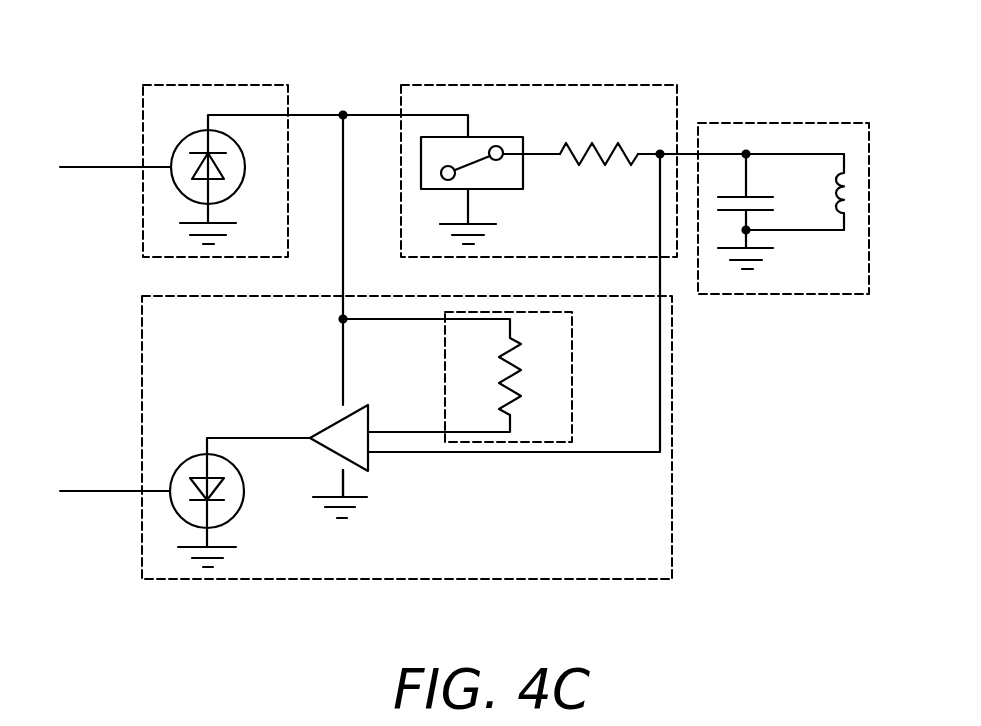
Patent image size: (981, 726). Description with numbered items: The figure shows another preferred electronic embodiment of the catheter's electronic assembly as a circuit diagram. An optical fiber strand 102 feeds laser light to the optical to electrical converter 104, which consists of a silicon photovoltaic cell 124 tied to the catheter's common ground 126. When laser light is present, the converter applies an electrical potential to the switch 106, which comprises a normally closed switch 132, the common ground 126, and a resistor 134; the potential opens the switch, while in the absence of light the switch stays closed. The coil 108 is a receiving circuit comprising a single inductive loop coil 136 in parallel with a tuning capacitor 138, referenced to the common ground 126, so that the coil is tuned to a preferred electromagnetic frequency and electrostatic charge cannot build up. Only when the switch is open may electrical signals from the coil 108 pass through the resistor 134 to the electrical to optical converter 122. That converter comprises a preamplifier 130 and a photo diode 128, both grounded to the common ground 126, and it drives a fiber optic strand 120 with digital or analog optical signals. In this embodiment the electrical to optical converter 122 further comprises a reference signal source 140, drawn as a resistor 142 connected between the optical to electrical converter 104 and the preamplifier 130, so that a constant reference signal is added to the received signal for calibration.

The optical fiber strand 102 is at (73, 167).
The optical to electrical converter 104 is at (215, 83).
The switch 106 is at (449, 83).
The pickup coil 108 is at (838, 120).
The fiber optic strand 120 is at (73, 490).
The electrical to optical converter 122 is at (430, 582).
The silicon photovoltaic cell 124 is at (177, 138).
The common ground 126 is at (190, 235).
The photo diode 128 is at (177, 465).
The preamplifier 130 is at (368, 460).
The normally closed switch 132 is at (483, 137).
The resistor 134 is at (612, 145).
The single inductive loop coil 136 is at (848, 198).
The tuning capacitor 138 is at (759, 197).
The reference signal source 140 is at (573, 417).
The feedback resistor 142 is at (515, 388).